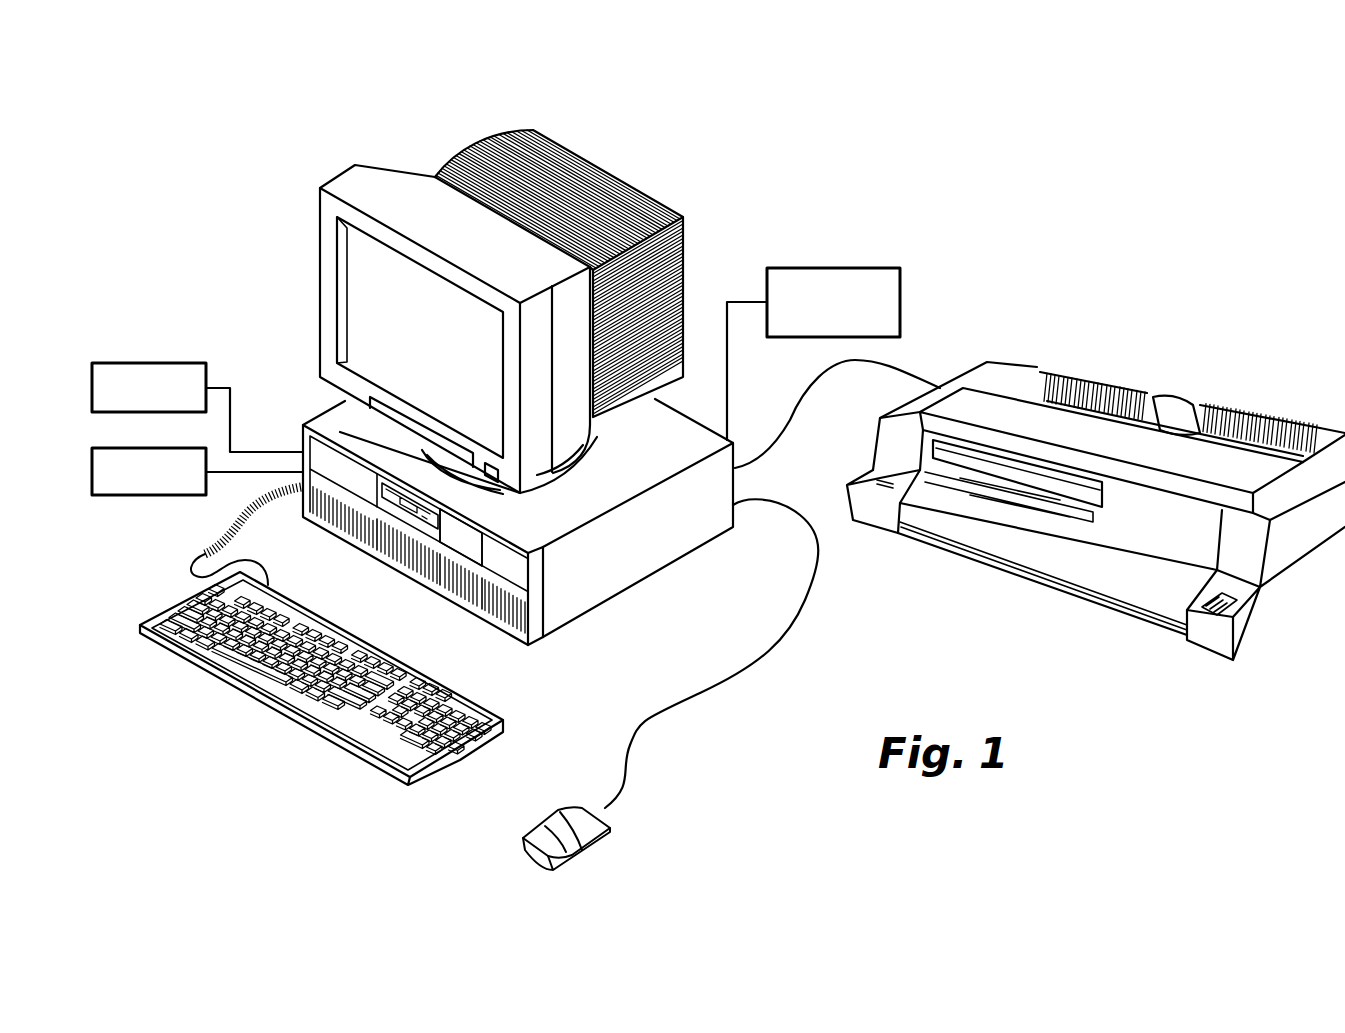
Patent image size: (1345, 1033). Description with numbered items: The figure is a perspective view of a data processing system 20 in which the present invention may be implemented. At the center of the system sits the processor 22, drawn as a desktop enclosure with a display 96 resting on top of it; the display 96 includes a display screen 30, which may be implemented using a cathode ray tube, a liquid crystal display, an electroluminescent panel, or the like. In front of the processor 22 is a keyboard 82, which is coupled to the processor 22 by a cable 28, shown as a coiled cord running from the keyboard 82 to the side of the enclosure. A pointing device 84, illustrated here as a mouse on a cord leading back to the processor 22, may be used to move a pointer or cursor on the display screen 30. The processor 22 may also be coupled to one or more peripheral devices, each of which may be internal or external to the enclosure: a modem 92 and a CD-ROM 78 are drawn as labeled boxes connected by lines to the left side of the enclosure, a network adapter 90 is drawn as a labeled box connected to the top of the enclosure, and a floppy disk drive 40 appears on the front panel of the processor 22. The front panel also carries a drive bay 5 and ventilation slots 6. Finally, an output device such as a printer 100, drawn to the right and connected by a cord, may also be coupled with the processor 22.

The data processing system 20 is at (888, 172).
The processor 22 is at (539, 661).
The display 96 is at (306, 267).
The display screen 30 is at (441, 348).
The floppy disk drive 40 is at (406, 508).
The drive bay 5 is at (463, 556).
The ventilation slots 6 is at (490, 597).
The network adapter 90 is at (900, 280).
The modem 92 is at (140, 363).
The CD-ROM 78 is at (140, 448).
The cable 28 is at (223, 533).
The keyboard 82 is at (292, 728).
The pointing device 84 is at (600, 843).
The printer 100 is at (1050, 351).